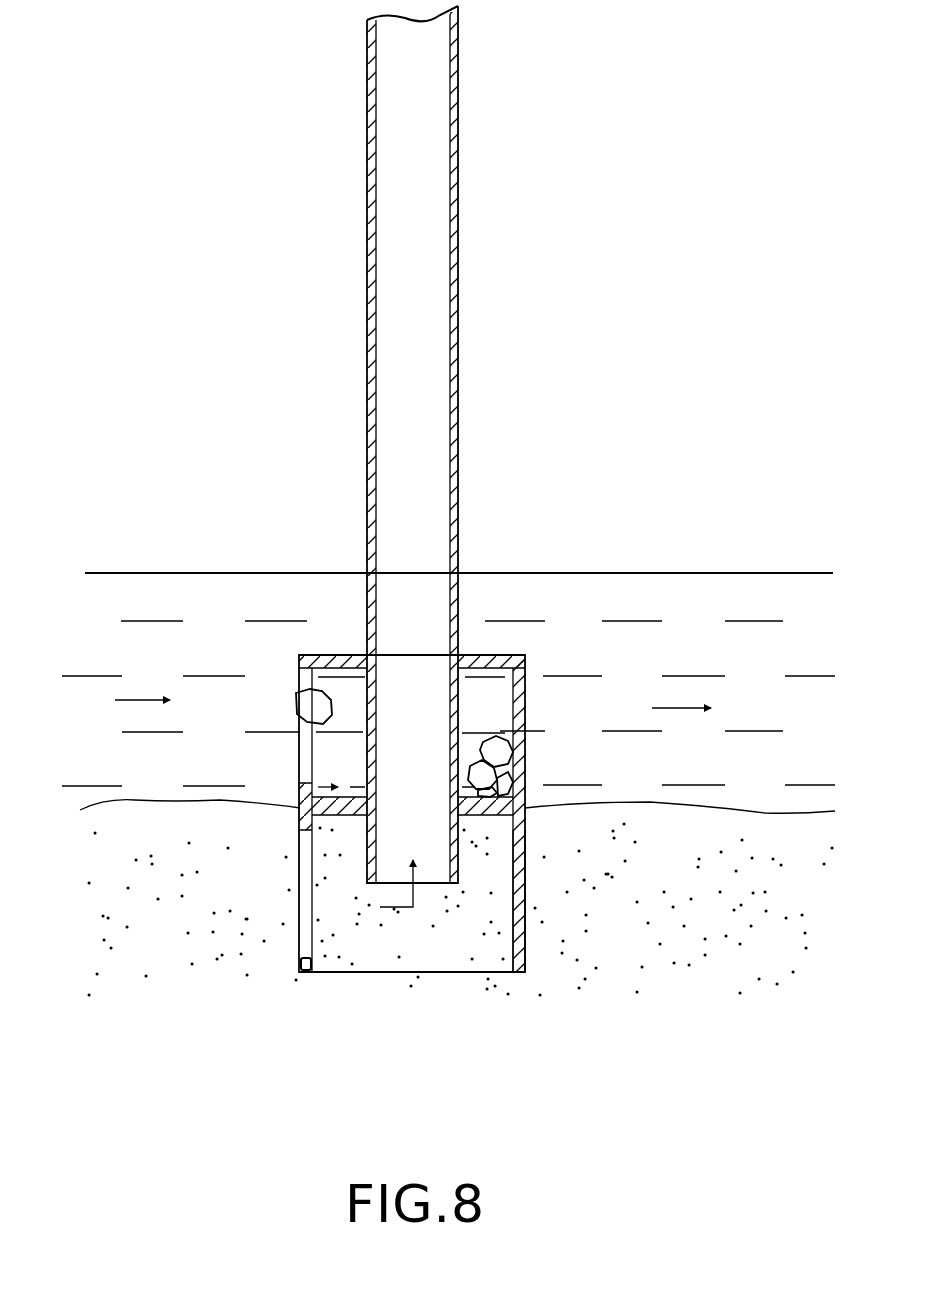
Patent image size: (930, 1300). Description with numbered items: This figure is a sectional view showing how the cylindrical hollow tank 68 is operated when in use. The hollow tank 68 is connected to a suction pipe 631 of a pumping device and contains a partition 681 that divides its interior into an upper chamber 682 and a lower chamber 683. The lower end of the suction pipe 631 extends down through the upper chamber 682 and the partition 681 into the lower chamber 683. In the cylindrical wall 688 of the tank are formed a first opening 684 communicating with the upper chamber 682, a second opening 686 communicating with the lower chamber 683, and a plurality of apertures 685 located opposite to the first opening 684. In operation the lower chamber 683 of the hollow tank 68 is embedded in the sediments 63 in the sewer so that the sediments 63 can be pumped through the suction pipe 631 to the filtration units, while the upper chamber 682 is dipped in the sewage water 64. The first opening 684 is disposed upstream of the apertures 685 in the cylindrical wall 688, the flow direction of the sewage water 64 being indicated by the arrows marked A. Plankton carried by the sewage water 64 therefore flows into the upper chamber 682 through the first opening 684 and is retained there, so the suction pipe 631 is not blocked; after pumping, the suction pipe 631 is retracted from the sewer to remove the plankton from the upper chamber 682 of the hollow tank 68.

The suction pipe 631 is at (458, 415).
The sewage water 64 is at (748, 628).
The hollow tank 68 is at (465, 657).
The upper chamber 682 is at (353, 688).
The first opening 684 is at (300, 774).
The apertures 685 is at (525, 690).
The partition 681 is at (341, 814).
The sediments 63 is at (766, 830).
The lower chamber 683 is at (493, 957).
The second opening 686 is at (300, 952).
The cylindrical wall 688 is at (522, 925).